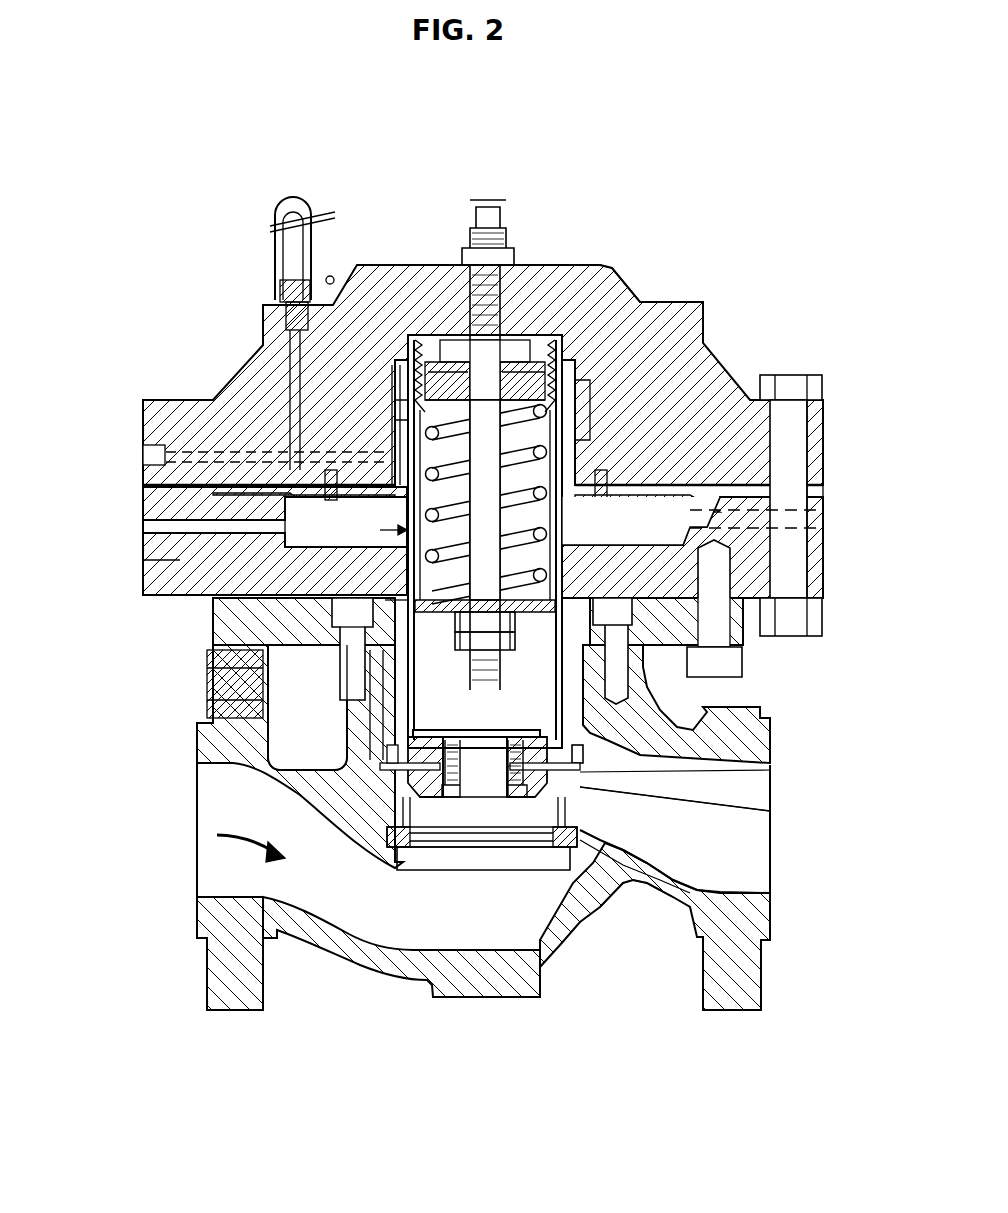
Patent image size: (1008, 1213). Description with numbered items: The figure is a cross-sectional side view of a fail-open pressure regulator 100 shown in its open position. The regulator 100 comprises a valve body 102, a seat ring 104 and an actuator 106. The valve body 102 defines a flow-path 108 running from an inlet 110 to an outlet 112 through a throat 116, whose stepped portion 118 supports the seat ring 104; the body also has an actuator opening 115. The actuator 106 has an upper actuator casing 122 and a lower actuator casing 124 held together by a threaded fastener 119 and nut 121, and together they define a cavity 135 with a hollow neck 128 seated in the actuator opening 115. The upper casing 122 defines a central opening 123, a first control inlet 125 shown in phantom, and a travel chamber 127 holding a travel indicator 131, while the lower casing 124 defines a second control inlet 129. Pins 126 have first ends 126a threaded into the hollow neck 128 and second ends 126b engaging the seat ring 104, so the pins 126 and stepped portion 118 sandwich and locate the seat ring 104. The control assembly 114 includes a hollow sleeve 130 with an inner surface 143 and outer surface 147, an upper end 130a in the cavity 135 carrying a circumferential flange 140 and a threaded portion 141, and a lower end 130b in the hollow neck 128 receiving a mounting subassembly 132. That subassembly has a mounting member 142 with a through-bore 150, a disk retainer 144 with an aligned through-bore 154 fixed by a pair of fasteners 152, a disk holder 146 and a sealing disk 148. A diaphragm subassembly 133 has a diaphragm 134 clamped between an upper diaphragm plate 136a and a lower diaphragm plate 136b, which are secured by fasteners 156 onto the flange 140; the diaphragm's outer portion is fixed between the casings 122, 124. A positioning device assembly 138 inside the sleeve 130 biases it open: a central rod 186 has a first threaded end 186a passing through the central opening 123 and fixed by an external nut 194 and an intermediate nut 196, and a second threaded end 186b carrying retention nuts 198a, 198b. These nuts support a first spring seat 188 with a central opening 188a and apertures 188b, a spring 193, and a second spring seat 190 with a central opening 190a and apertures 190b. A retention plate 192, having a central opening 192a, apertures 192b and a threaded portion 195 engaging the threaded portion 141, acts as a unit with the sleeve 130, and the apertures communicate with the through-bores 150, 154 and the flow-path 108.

The pressure regulator 100 is at (490, 162).
The valve body 102 is at (758, 1010).
The seat ring 104 is at (733, 893).
The actuator 106 is at (357, 262).
The flow-path 108 is at (245, 850).
The inlet 110 is at (205, 895).
The outlet 112 is at (750, 847).
The control assembly 114 is at (600, 542).
The actuator opening 115 is at (584, 746).
The throat 116 is at (563, 965).
The stepped portion 118 is at (622, 884).
The threaded fastener 119 is at (795, 510).
The nut 121 is at (812, 624).
The upper actuator casing 122 is at (598, 268).
The central opening 123 is at (505, 312).
The lower actuator casing 124 is at (820, 590).
The first control inlet 125 is at (145, 452).
The pins 126 is at (330, 910).
The first ends 126a is at (330, 800).
The second ends 126b is at (370, 920).
The travel chamber 127 is at (292, 345).
The hollow neck 128 is at (235, 718).
The second control inlet 129 is at (285, 520).
The hollow sleeve 130 is at (300, 600).
The upper end 130a is at (395, 405).
The lower end 130b is at (385, 765).
The travel indicator 131 is at (290, 262).
The mounting subassembly 132 is at (730, 700).
The diaphragm subassembly 133 is at (775, 540).
The diaphragm 134 is at (215, 494).
The cavity 135 is at (641, 521).
The upper diaphragm plate 136a is at (770, 378).
The lower diaphragm plate 136b is at (235, 505).
The positioning device assembly 138 is at (430, 330).
The circumferential flange 140 is at (230, 590).
The threaded portion 141 is at (285, 295).
The mounting member 142 is at (400, 795).
The inner surface 143 is at (385, 607).
The disk retainer 144 is at (405, 850).
The disk holder 146 is at (712, 735).
The outer surface 147 is at (340, 648).
The sealing disk 148 is at (770, 811).
The through-bore 150 is at (515, 798).
The fasteners 152 is at (450, 798).
The through-bore 154 is at (540, 800).
The fasteners 156 is at (330, 498).
The central rod 186 is at (270, 482).
The first threaded end 186a is at (503, 228).
The second threaded end 186b is at (395, 772).
The first spring seat 188 is at (300, 712).
The central opening 188a is at (330, 628).
The apertures 188b is at (372, 660).
The second spring seat 190 is at (400, 425).
The central opening 190a is at (565, 430).
The apertures 190b is at (560, 420).
The retention plate 192 is at (548, 330).
The central opening 192a is at (525, 384).
The apertures 192b is at (560, 405).
The spring 193 is at (600, 405).
The external nut 194 is at (462, 330).
The threaded portion 195 is at (395, 380).
The intermediate nut 196 is at (440, 348).
The retention nut 198a is at (460, 620).
The retention nut 198b is at (512, 640).